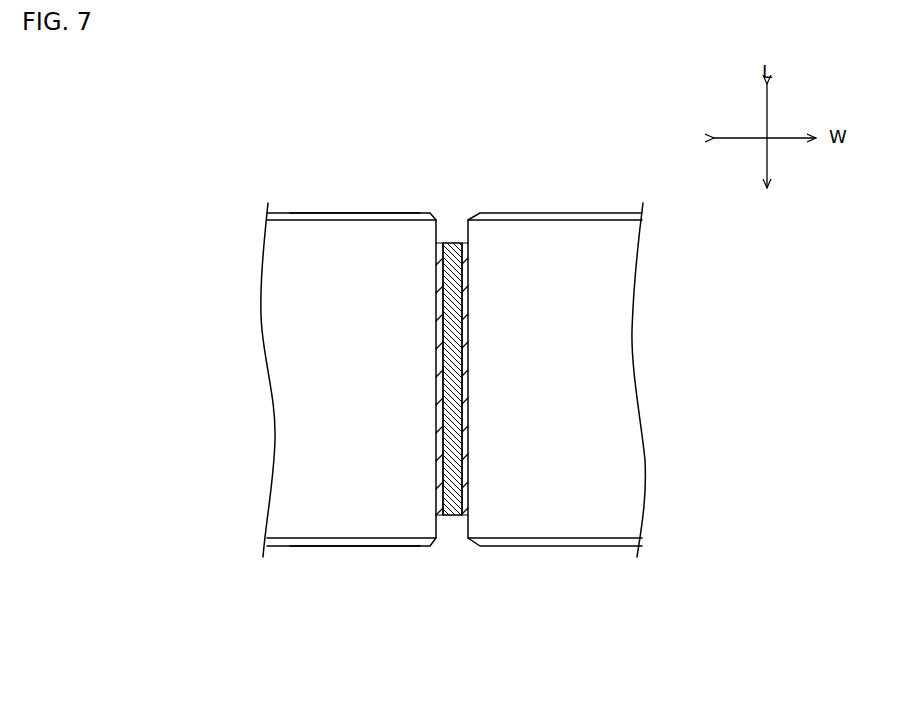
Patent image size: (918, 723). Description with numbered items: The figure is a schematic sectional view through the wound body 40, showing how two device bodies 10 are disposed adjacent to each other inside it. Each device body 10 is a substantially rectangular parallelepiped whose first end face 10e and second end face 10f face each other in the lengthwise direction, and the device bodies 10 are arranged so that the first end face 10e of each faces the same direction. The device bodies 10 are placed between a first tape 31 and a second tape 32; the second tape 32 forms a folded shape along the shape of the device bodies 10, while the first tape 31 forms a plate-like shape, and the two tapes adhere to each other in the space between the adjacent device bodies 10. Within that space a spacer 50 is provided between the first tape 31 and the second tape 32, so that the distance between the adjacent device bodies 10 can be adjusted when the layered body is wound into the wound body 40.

The device body 10 is at (317, 211).
The second end face 10f is at (375, 212).
The first end face 10e is at (343, 548).
The first tape 31 is at (441, 222).
The second tape 32 is at (469, 222).
The wound body 40 is at (553, 190).
The spacer 50 is at (449, 517).